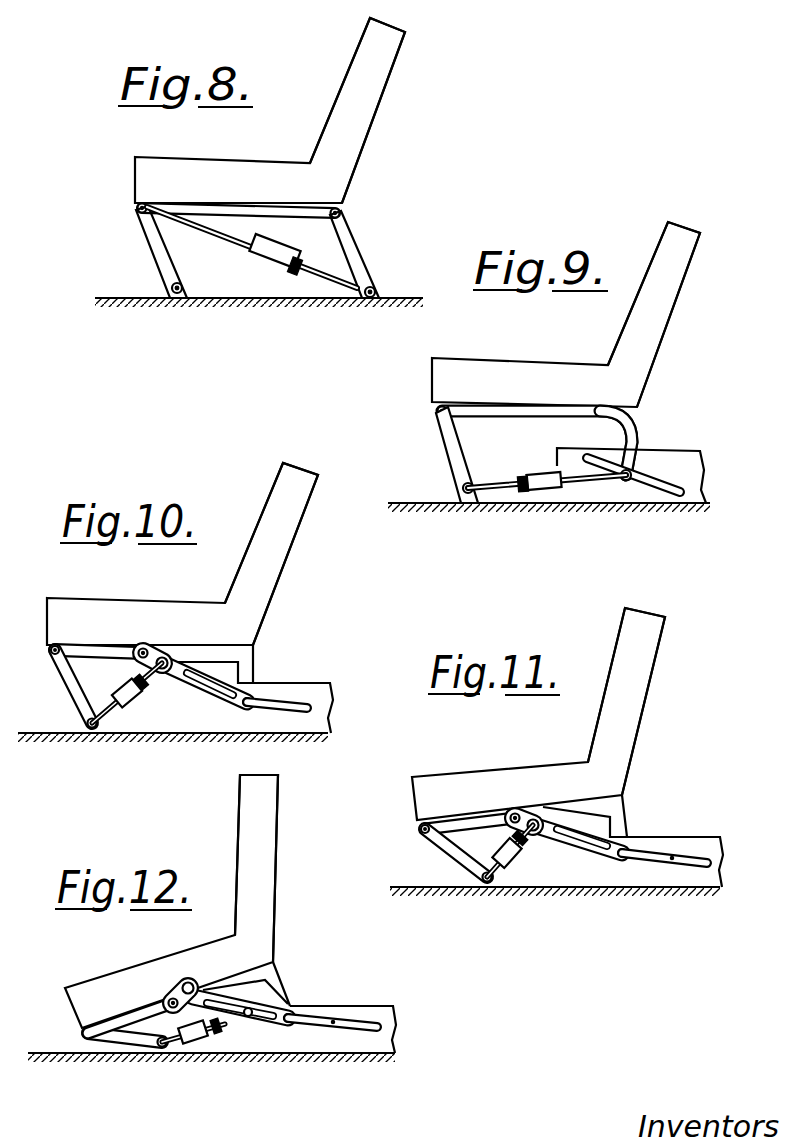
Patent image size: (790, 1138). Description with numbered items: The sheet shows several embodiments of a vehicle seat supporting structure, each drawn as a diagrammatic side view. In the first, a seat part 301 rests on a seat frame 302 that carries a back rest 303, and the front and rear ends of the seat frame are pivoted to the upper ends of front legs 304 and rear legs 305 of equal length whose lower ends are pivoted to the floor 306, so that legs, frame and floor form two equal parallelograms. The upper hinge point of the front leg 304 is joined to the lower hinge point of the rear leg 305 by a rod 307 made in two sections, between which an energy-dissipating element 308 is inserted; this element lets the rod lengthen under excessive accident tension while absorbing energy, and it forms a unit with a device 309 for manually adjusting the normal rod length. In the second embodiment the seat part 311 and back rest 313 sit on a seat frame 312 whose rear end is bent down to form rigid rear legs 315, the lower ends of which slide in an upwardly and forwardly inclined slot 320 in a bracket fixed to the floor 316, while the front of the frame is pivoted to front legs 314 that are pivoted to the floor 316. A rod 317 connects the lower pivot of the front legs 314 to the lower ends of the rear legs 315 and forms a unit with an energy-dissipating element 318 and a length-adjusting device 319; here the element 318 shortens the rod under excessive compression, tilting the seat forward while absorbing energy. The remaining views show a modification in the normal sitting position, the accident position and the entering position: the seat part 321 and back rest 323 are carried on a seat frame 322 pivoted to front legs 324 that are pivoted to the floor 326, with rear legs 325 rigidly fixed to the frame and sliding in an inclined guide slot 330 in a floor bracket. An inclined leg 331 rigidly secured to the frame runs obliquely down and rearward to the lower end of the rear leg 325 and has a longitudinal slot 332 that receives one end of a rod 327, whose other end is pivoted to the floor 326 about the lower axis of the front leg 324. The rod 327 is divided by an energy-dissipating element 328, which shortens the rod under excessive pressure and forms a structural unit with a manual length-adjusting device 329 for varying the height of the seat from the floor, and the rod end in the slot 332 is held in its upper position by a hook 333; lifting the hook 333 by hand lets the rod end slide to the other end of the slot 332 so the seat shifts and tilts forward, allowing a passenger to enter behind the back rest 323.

In FIG. 8, the seat part 301 is at (173, 157).
In FIG. 8, the seat frame 302 is at (232, 208).
In FIG. 8, the back rest 303 is at (365, 102).
In FIG. 8, the front leg 304 is at (143, 247).
In FIG. 8, the rear leg 305 is at (352, 248).
In FIG. 8, the floor 306 is at (213, 303).
In FIG. 8, the rod 307 is at (220, 238).
In FIG. 8, the energy-dissipating element 308 is at (275, 257).
In FIG. 8, the adjusting device 309 is at (293, 272).
In FIG. 9, the seat part 311 is at (507, 367).
In FIG. 9, the seat frame 312 is at (527, 412).
In FIG. 9, the back rest 313 is at (662, 322).
In FIG. 9, the front leg 314 is at (453, 447).
In FIG. 9, the rear rigid leg 315 is at (633, 443).
In FIG. 9, the floor 316 is at (413, 503).
In FIG. 9, the rod 317 is at (573, 487).
In FIG. 9, the energy-dissipating element 318 is at (542, 483).
In FIG. 9, the length-adjusting device 319 is at (517, 495).
In FIG. 9, the inclined slot 320 is at (658, 483).
In FIG. 10, the seat part 321 is at (110, 612).
In FIG. 11, the seat part 321 is at (457, 777).
In FIG. 12, the seat part 321 is at (95, 987).
In FIG. 10, the seat frame 322 is at (88, 650).
In FIG. 11, the seat frame 322 is at (475, 823).
In FIG. 12, the seat frame 322 is at (132, 1012).
In FIG. 10, the back rest 323 is at (287, 550).
In FIG. 11, the back rest 323 is at (635, 693).
In FIG. 12, the back rest 323 is at (263, 868).
In FIG. 10, the front leg 324 is at (77, 690).
In FIG. 11, the front leg 324 is at (448, 848).
In FIG. 12, the front leg 324 is at (110, 1043).
In FIG. 10, the rear leg 325 is at (247, 672).
In FIG. 11, the rear leg 325 is at (620, 820).
In FIG. 12, the rear leg 325 is at (278, 983).
In FIG. 10, the floor 326 is at (42, 735).
In FIG. 11, the floor 326 is at (423, 888).
In FIG. 12, the floor 326 is at (353, 1062).
In FIG. 10, the rod 327 is at (117, 713).
In FIG. 11, the rod 327 is at (508, 883).
In FIG. 12, the rod 327 is at (173, 1047).
In FIG. 10, the energy-dissipating element 328 is at (128, 708).
In FIG. 11, the energy-dissipating element 328 is at (522, 870).
In FIG. 12, the energy-dissipating element 328 is at (202, 1045).
In FIG. 10, the spring 329 is at (134, 681).
In FIG. 11, the spring 329 is at (527, 843).
In FIG. 12, the spring 329 is at (220, 1033).
In FIG. 10, the guide slot 330 is at (300, 695).
In FIG. 11, the guide slot 330 is at (673, 845).
In FIG. 12, the guide slot 330 is at (333, 1020).
In FIG. 10, the inclined leg 331 is at (233, 690).
In FIG. 11, the inclined leg 331 is at (567, 820).
In FIG. 12, the inclined leg 331 is at (277, 1020).
In FIG. 10, the longitudinal slot 332 is at (192, 670).
In FIG. 11, the longitudinal slot 332 is at (590, 857).
In FIG. 12, the longitudinal slot 332 is at (213, 1007).
In FIG. 10, the hook 333 is at (157, 647).
In FIG. 11, the hook 333 is at (527, 807).
In FIG. 12, the hook 333 is at (170, 987).